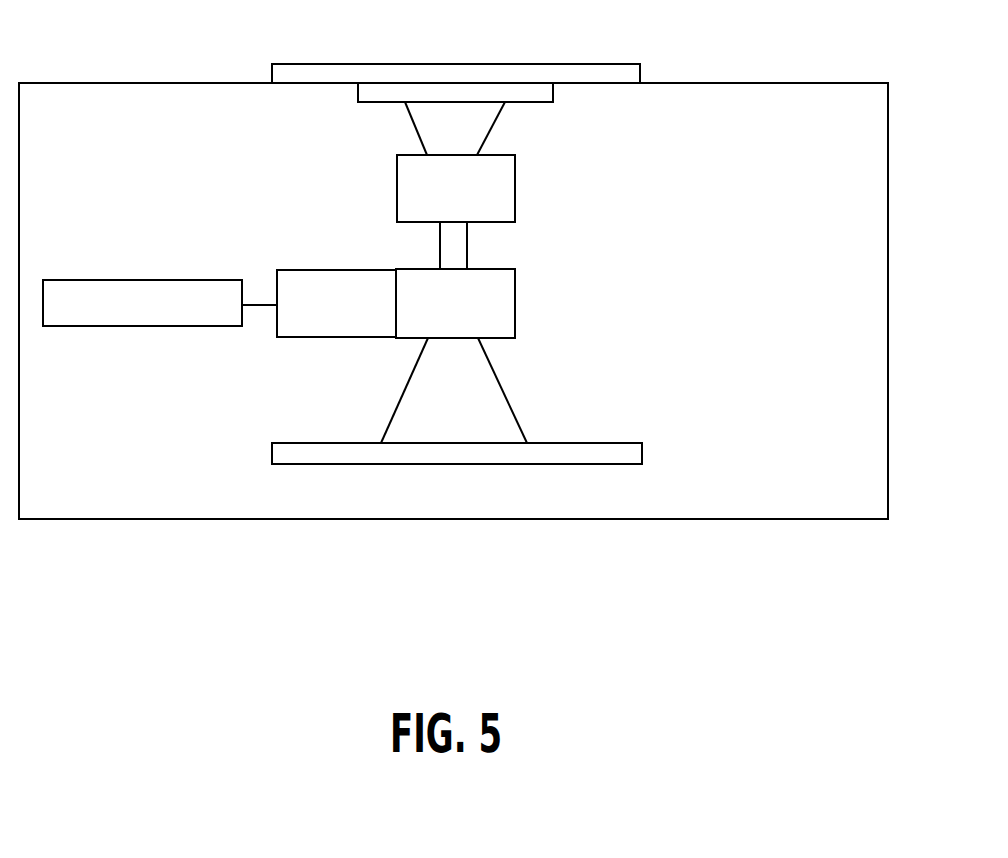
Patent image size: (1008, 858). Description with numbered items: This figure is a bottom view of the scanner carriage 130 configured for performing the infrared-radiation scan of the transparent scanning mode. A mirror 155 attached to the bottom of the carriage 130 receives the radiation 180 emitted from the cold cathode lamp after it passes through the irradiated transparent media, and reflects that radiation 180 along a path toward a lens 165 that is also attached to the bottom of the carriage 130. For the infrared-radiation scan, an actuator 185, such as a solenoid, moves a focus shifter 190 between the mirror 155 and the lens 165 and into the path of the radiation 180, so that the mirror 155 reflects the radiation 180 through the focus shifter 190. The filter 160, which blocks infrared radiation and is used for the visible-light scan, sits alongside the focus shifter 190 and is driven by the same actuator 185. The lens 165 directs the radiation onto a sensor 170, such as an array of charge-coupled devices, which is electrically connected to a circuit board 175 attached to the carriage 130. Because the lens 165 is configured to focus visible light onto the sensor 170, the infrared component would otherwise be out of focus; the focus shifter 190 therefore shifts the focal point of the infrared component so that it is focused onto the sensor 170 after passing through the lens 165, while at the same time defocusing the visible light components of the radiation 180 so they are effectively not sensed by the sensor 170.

The carriage 130 is at (771, 451).
The mirror 155 is at (436, 453).
The filter 160 is at (307, 325).
The lens 165 is at (515, 180).
The sensor 170 is at (540, 97).
The circuit board 175 is at (627, 63).
The radiation 180 is at (500, 383).
The actuator 185 is at (147, 280).
The focus shifter 190 is at (505, 300).